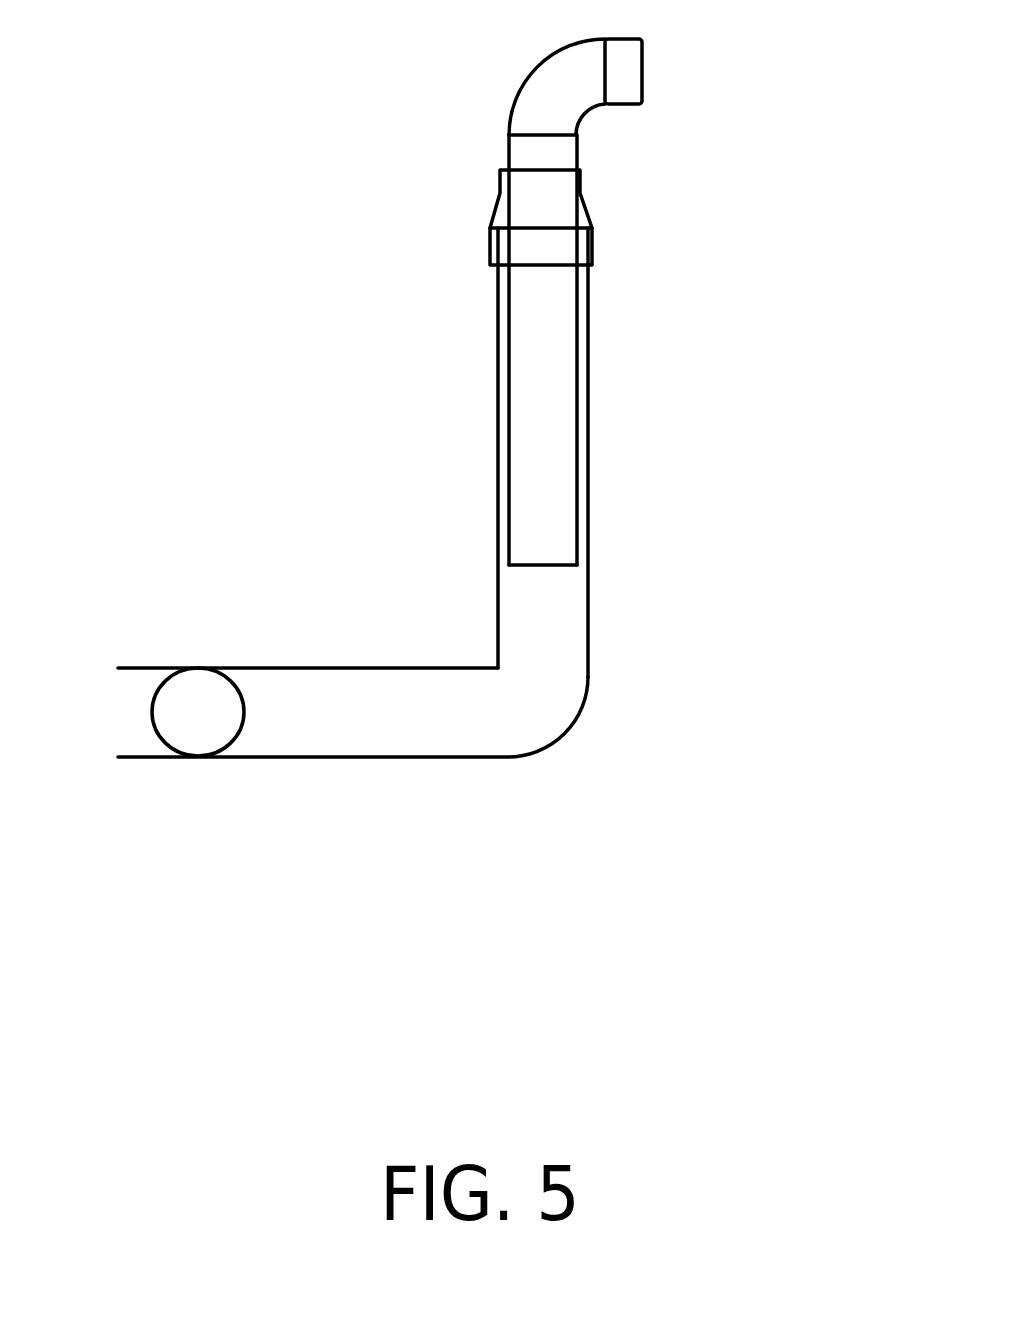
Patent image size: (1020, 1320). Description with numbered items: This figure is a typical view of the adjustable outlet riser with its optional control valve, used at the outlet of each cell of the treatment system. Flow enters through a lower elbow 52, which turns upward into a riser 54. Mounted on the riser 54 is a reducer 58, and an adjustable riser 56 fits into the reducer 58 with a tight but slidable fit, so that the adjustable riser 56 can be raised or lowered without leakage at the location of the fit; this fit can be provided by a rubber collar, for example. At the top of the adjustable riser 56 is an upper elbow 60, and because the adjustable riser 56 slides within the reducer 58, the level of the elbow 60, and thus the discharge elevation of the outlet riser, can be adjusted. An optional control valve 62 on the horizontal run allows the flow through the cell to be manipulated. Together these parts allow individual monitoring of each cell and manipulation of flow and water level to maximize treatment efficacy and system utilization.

The elbow 52 is at (567, 730).
The riser 54 is at (588, 610).
The adjustable riser 56 is at (578, 397).
The reducer 58 is at (593, 228).
The elbow 60 is at (642, 70).
The control valve 62 is at (198, 712).